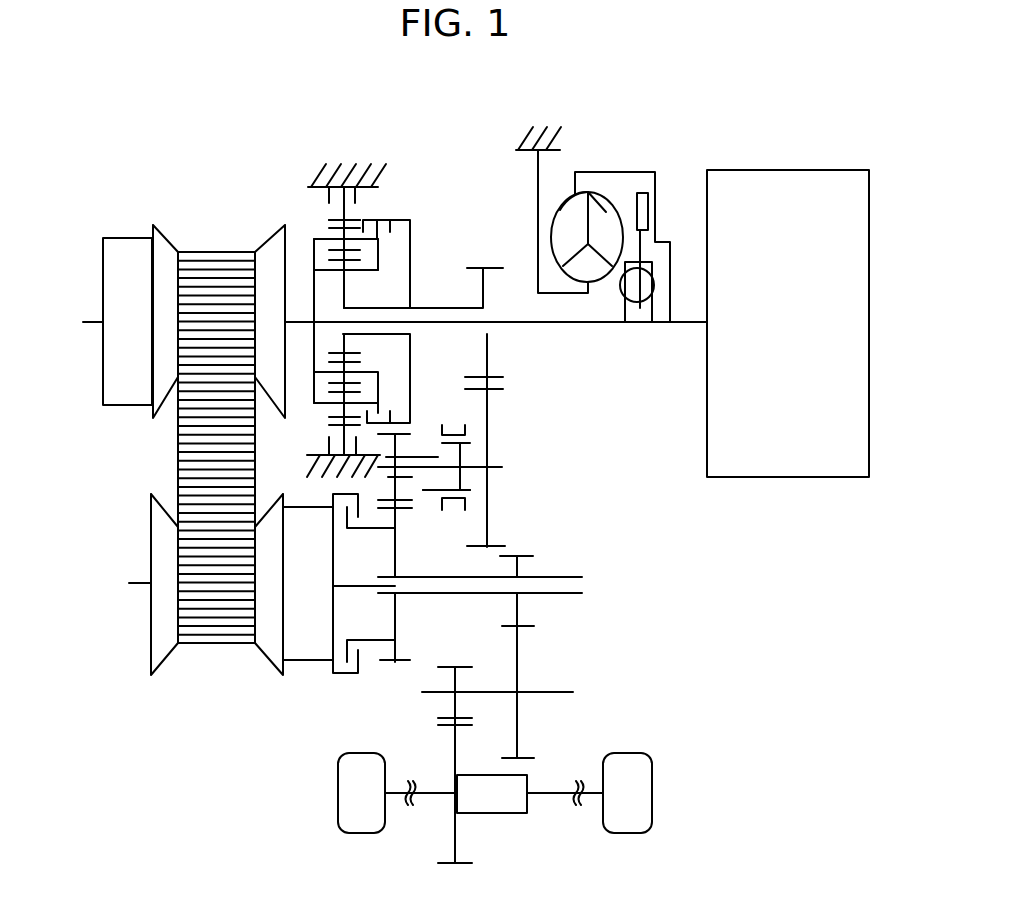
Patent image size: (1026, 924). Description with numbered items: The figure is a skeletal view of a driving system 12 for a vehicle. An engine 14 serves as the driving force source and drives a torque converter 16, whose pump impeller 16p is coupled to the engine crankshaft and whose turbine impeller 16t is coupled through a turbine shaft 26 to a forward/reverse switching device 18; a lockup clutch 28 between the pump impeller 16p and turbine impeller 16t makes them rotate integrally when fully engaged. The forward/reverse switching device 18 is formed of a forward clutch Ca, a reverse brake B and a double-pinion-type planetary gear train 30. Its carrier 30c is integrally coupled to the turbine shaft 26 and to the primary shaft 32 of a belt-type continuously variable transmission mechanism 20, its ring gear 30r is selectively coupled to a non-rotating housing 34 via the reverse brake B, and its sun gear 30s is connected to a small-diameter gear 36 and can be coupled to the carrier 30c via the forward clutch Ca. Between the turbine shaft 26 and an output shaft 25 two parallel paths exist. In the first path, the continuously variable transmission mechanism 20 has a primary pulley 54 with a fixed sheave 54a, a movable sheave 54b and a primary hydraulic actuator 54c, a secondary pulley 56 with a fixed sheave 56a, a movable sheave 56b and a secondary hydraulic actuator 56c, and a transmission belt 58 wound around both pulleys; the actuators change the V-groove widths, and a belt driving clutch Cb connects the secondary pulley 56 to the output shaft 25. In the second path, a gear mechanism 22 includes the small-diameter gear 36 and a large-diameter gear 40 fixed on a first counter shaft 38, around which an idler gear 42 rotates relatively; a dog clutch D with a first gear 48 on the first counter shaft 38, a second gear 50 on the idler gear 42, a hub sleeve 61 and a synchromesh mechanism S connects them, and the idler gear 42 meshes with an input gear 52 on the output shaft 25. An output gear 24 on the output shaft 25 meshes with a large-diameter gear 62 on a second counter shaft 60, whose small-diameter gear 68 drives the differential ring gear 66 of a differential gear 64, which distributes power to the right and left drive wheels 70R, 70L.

The driving system 12 is at (615, 92).
The engine 14 is at (759, 181).
The torque converter 16 is at (600, 293).
The pump impeller 16p is at (562, 210).
The turbine impeller 16t is at (620, 195).
The forward/reverse switching device 18 is at (405, 188).
The belt-type continuously variable transmission mechanism 20 is at (203, 198).
The gear mechanism 22 is at (530, 380).
The output gear 24 is at (523, 556).
The output shaft 25 is at (452, 596).
The turbine shaft 26 is at (505, 320).
The lockup clutch 28 is at (648, 211).
The double-pinion-type planetary gear train 30 is at (399, 255).
The carrier 30c is at (382, 266).
The ring gear 30r is at (328, 221).
The sun gear 30s is at (372, 350).
The primary shaft 32 is at (298, 320).
The housing 34 is at (543, 122).
The small-diameter gear 36 is at (488, 265).
The first counter shaft 38 is at (503, 467).
The large-diameter gear 40 is at (486, 548).
The idler gear 42 is at (386, 502).
The first gear 48 is at (466, 498).
The second gear 50 is at (435, 453).
The input gear 52 is at (389, 665).
The primary pulley 54 is at (70, 292).
The fixed sheave 54a is at (267, 262).
The movable sheave 54b is at (162, 250).
The primary hydraulic actuator 54c is at (121, 250).
The secondary pulley 56 is at (103, 583).
The fixed sheave 56a is at (162, 543).
The movable sheave 56b is at (268, 643).
The secondary hydraulic actuator 56c is at (299, 658).
The transmission belt 58 is at (200, 480).
The second counter shaft 60 is at (540, 691).
The hub sleeve 61 is at (449, 430).
The large-diameter gear 62 is at (530, 762).
The differential gear 64 is at (512, 827).
The differential ring gear 66 is at (465, 865).
The small-diameter gear 68 is at (449, 668).
The left drive wheel 70L is at (357, 760).
The right drive wheel 70R is at (622, 760).
The reverse brake B is at (333, 247).
The forward clutch Ca is at (377, 251).
The belt driving clutch Cb is at (364, 598).
The dog clutch D is at (453, 419).
The synchromesh mechanism S is at (432, 503).